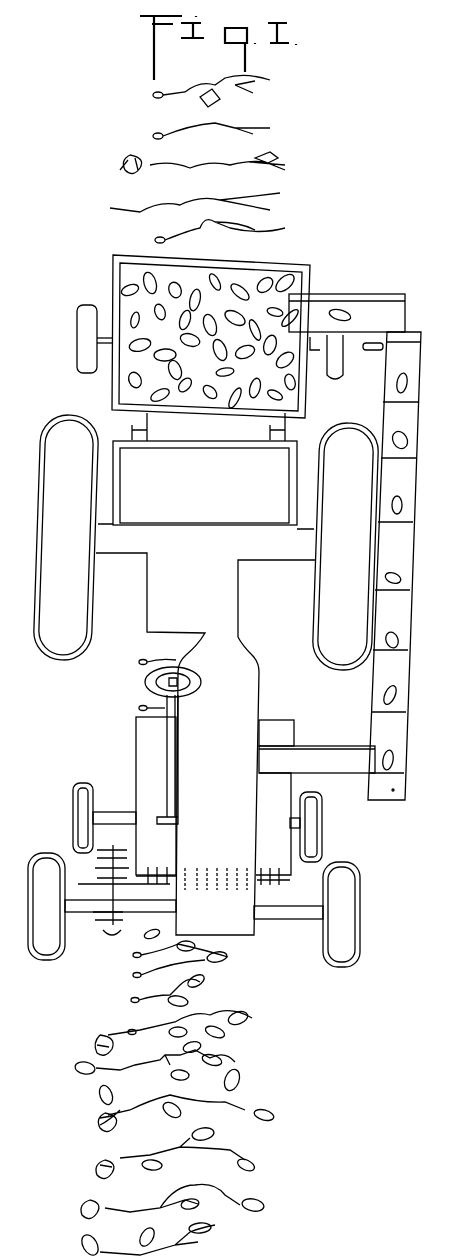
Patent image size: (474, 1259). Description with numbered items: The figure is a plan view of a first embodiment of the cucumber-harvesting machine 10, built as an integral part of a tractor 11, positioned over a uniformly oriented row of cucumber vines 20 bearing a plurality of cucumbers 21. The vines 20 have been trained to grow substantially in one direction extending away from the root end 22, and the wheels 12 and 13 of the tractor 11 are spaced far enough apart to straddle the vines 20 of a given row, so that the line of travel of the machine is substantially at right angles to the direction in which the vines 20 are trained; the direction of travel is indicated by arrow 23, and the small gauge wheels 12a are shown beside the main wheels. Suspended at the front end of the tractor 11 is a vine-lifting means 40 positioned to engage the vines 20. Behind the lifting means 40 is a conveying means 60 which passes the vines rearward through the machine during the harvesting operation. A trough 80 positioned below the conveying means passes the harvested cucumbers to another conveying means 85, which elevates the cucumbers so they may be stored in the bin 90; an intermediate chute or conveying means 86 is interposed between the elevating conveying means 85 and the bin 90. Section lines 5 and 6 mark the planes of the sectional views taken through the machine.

The cucumber-harvesting machine 10 is at (393, 810).
The tractor 11 is at (202, 598).
The wheels 12 is at (42, 853).
The gauge wheels 12a is at (82, 783).
The wheels 13 is at (53, 420).
The vines 20 is at (272, 163).
The cucumbers 21 is at (290, 284).
The root end 22 is at (110, 208).
The direction of travel 23 is at (96, 726).
The vine-lifting means 40 is at (185, 905).
The section line 5 is at (291, 714).
The section line 6 is at (77, 966).
The conveying means 60 is at (136, 746).
The trough 80 is at (328, 746).
The conveying means 85 is at (408, 600).
The intermediate chute or conveying means 86 is at (404, 294).
The bin 90 is at (305, 260).